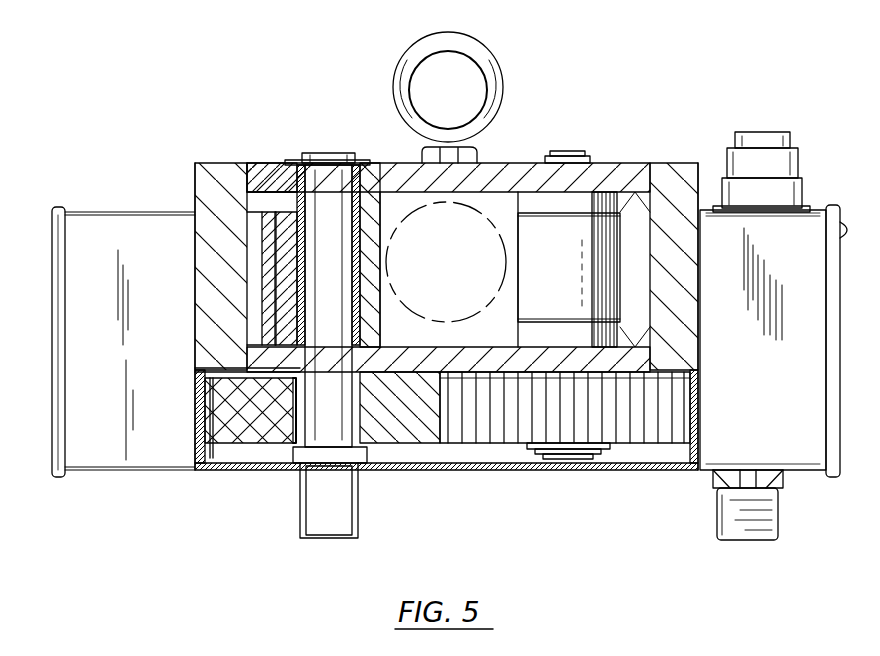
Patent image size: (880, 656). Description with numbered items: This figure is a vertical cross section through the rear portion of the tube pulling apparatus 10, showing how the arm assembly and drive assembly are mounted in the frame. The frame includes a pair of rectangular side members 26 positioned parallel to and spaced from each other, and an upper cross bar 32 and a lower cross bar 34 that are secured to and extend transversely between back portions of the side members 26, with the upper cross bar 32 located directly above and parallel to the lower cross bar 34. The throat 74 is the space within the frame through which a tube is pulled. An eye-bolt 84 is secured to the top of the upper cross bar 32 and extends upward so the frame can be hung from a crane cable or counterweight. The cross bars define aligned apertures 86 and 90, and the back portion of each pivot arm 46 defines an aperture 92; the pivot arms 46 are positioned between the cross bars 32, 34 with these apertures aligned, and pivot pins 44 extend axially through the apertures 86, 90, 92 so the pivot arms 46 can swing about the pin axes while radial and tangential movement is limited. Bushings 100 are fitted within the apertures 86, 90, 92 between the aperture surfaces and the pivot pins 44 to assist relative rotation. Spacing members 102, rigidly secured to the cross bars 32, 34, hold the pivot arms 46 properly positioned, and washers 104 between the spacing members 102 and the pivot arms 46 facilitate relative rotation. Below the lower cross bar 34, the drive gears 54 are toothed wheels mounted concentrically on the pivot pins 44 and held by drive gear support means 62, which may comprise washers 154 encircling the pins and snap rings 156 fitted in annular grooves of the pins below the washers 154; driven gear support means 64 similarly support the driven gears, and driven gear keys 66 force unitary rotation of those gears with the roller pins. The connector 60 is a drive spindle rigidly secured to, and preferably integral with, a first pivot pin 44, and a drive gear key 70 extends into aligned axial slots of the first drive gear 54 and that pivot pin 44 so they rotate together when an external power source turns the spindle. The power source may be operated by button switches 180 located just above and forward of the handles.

The tube pulling apparatus 10 is at (718, 70).
The side members 26 is at (208, 170).
The upper cross bar 32 is at (637, 160).
The lower cross bar 34 is at (688, 346).
The pivot pins 44 is at (568, 152).
The pivot arms 46 is at (272, 312).
The drive gears 54 is at (447, 430).
The connector 60 is at (330, 530).
The drive gear support means 62 is at (385, 455).
The driven gear support means 64 is at (288, 453).
The driven gear keys 66 is at (262, 410).
The drive gear key 70 is at (203, 455).
The throat 74 is at (483, 197).
The eye-bolt 84 is at (490, 72).
The aperture 86 is at (322, 165).
The aperture 90 is at (285, 368).
The aperture 92 is at (298, 244).
The bushings 100 is at (240, 212).
The spacing members 102 is at (283, 182).
The washers 104 is at (390, 235).
The washers 154 is at (545, 458).
The snap rings 156 is at (560, 458).
The button switches 180 is at (777, 136).